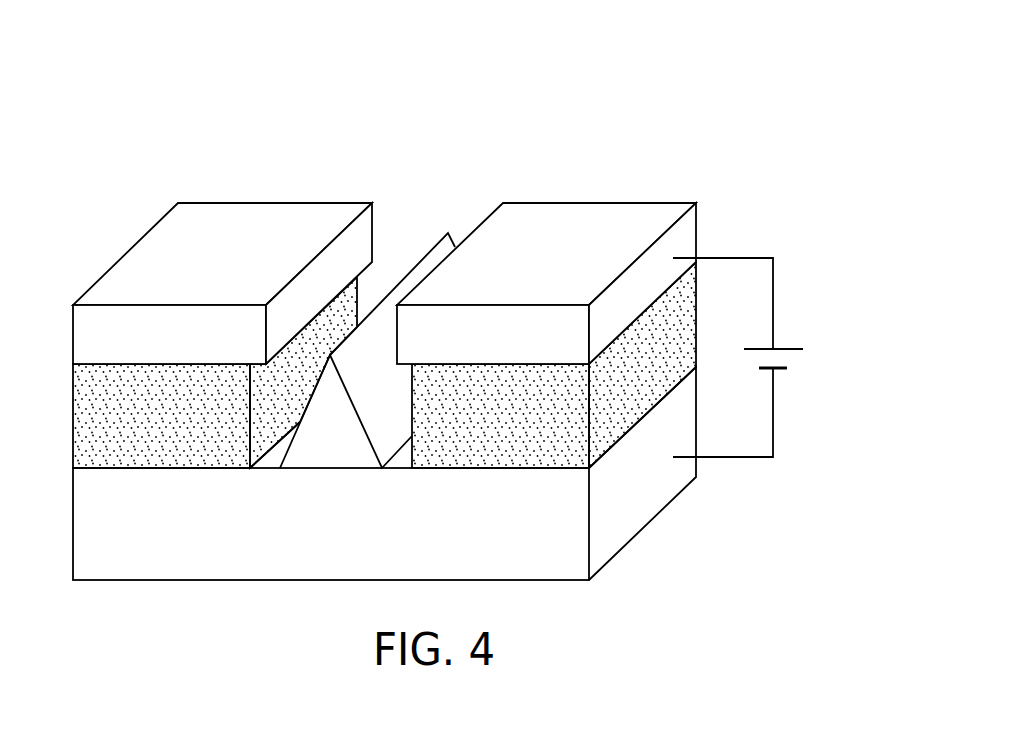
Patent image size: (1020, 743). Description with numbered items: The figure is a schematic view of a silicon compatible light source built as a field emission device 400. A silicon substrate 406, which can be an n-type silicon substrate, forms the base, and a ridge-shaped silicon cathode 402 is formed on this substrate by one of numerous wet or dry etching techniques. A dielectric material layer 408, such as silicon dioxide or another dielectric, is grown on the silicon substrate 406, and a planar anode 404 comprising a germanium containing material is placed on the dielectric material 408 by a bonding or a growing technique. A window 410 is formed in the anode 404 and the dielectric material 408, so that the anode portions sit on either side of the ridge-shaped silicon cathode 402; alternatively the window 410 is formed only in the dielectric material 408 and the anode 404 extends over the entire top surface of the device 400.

The memristive device 400 is at (507, 101).
The conductive filament strip 402 is at (431, 241).
The electrode 404 is at (244, 260).
The substrate 406 is at (570, 563).
The insulator 408 is at (183, 401).
The gap between electrodes 410 is at (397, 217).